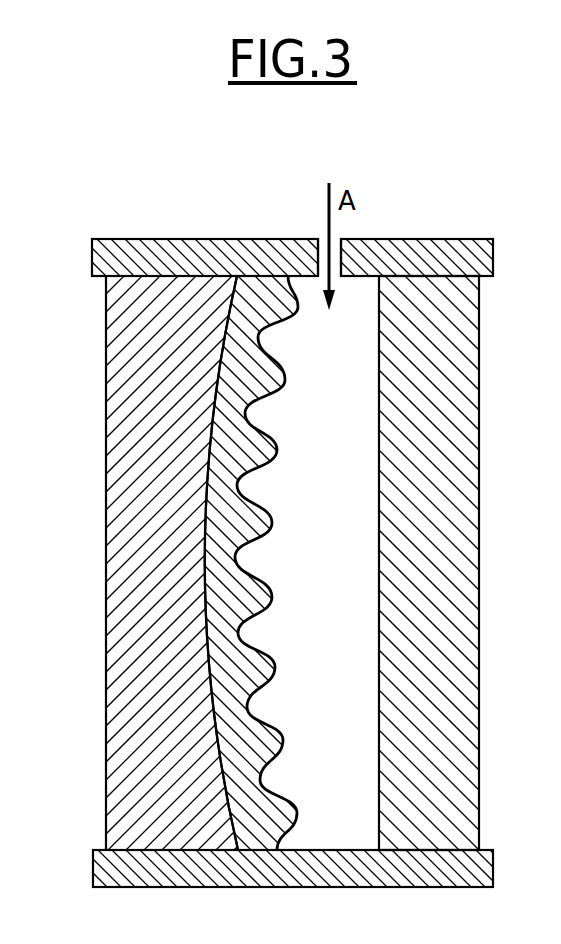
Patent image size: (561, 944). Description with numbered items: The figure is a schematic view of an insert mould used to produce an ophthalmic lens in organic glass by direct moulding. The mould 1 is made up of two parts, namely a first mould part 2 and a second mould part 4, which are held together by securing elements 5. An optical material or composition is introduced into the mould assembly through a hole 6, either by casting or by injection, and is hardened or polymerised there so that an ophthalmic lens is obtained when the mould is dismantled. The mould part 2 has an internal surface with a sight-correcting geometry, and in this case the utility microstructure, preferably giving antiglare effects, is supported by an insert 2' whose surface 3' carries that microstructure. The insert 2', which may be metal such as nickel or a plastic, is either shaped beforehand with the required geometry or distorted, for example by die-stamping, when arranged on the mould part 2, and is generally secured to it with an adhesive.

The mould 1 is at (98, 222).
The mould part 2 is at (280, 563).
The insert 2' is at (140, 563).
The surface of the insert 3' is at (280, 563).
The mould part 4 is at (432, 470).
The securing elements 5 is at (122, 258).
The hole 6 is at (322, 250).